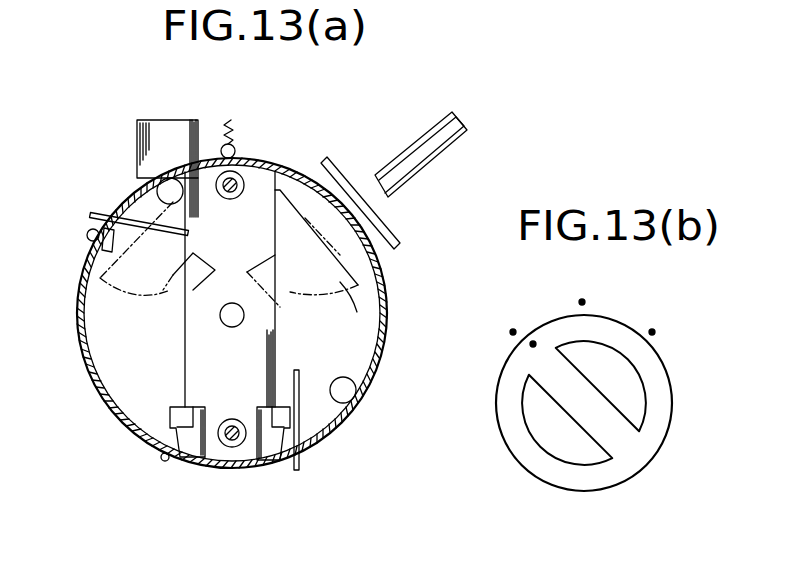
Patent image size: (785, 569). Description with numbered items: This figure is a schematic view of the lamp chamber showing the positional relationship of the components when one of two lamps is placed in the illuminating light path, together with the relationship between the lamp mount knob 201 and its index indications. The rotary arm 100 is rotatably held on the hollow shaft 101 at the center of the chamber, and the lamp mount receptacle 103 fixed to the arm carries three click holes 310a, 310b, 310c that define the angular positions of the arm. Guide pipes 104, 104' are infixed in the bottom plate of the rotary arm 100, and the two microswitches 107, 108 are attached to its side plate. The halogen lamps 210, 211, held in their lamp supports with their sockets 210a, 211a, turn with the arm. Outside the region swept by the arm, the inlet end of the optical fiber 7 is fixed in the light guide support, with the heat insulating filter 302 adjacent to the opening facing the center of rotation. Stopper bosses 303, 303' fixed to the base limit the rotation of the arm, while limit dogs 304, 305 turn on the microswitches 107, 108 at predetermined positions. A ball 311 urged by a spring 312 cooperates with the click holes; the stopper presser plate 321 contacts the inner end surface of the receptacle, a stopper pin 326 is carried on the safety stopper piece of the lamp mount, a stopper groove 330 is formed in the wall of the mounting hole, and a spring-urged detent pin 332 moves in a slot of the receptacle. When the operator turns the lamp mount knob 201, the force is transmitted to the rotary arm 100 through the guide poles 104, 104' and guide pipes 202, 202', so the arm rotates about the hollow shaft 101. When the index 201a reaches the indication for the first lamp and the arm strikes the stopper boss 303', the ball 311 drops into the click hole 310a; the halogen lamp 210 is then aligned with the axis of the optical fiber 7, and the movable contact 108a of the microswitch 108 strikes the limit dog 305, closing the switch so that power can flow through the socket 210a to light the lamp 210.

In FIG. 13A, the optical fiber 7 is at (443, 147).
In FIG. 13A, the rotary arm 100 is at (184, 380).
In FIG. 13A, the hollow shaft 101 is at (236, 326).
In FIG. 13A, the lamp mount receptacle 103 is at (386, 306).
In FIG. 13A, the guide pipe 104 is at (239, 486).
In FIG. 13A, the guide pipe 104' is at (242, 212).
In FIG. 13A, the microswitch 107 is at (197, 457).
In FIG. 13A, the microswitch 108 is at (272, 450).
In FIG. 13A, the movable contact 108a is at (290, 435).
In FIG. 13B, the lamp mount knob 201 is at (616, 435).
In FIG. 13B, the index 201a is at (530, 346).
In FIG. 13A, the guide pipe 202 is at (224, 219).
In FIG. 13A, the guide pipe 202' is at (231, 411).
In FIG. 13A, the halogen lamp 210 is at (372, 313).
In FIG. 13A, the socket 210a is at (292, 298).
In FIG. 13A, the halogen lamp 211 is at (118, 293).
In FIG. 13A, the socket 211a is at (170, 296).
In FIG. 13A, the heat insulating filter 302 is at (397, 246).
In FIG. 13A, the stopper boss 303 is at (380, 401).
In FIG. 13A, the stopper boss 303' is at (134, 150).
In FIG. 13A, the limit dog 304 is at (100, 216).
In FIG. 13A, the limit dog 305 is at (300, 406).
In FIG. 13A, the click hole 310a is at (276, 160).
In FIG. 13A, the click hole 310b is at (112, 215).
In FIG. 13A, the click hole 310c is at (79, 345).
In FIG. 13A, the ball 311 is at (238, 150).
In FIG. 13A, the spring 312 is at (237, 122).
In FIG. 13A, the stopper presser plate 321 is at (177, 130).
In FIG. 13A, the stopper pin 326 is at (85, 265).
In FIG. 13A, the stopper groove 330 is at (207, 157).
In FIG. 13A, the detent pin 332 is at (87, 236).